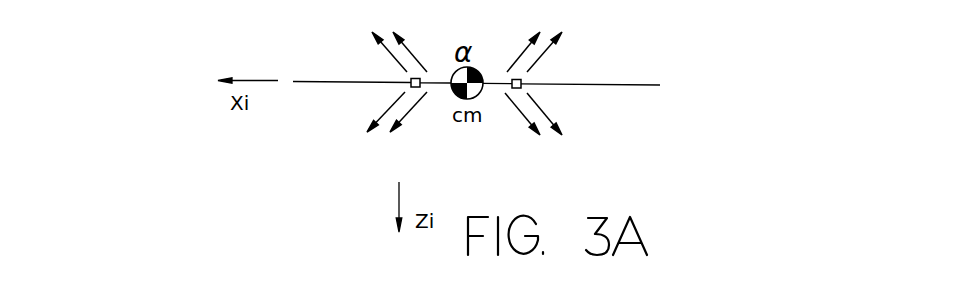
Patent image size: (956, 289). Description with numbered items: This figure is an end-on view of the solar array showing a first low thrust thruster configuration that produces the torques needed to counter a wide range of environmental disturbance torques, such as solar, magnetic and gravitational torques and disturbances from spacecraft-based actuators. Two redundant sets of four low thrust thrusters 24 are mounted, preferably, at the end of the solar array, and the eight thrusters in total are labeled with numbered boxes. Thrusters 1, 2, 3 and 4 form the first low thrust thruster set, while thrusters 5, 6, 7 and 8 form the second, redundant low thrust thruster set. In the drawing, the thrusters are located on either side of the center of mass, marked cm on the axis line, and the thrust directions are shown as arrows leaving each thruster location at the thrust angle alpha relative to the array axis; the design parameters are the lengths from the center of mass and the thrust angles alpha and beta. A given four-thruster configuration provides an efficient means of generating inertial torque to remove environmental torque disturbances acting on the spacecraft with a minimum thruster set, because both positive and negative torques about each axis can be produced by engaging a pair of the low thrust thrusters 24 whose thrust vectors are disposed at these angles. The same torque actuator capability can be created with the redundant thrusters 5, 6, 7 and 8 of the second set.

The low thrust thrusters 24 is at (645, 40).
The thruster 1 is at (368, 36).
The thruster 2 is at (366, 129).
The thruster 3 is at (515, 37).
The thruster 4 is at (513, 131).
The thruster 5 is at (418, 36).
The thruster 6 is at (415, 129).
The thruster 7 is at (563, 37).
The thruster 8 is at (563, 131).